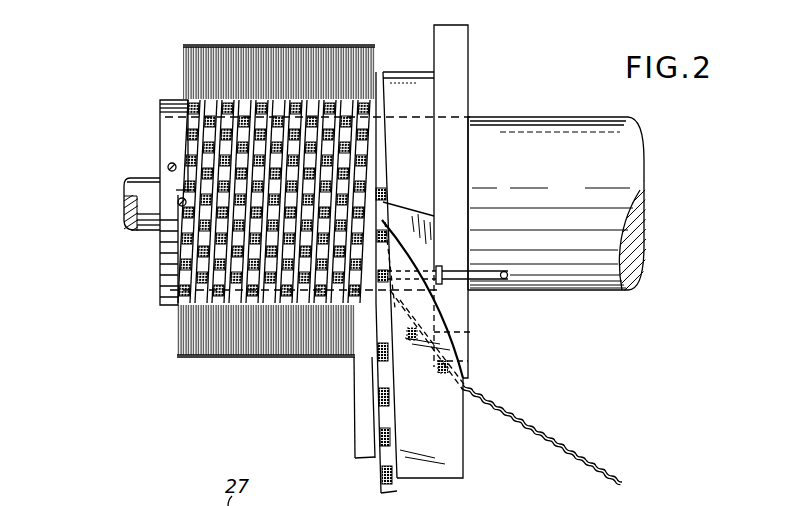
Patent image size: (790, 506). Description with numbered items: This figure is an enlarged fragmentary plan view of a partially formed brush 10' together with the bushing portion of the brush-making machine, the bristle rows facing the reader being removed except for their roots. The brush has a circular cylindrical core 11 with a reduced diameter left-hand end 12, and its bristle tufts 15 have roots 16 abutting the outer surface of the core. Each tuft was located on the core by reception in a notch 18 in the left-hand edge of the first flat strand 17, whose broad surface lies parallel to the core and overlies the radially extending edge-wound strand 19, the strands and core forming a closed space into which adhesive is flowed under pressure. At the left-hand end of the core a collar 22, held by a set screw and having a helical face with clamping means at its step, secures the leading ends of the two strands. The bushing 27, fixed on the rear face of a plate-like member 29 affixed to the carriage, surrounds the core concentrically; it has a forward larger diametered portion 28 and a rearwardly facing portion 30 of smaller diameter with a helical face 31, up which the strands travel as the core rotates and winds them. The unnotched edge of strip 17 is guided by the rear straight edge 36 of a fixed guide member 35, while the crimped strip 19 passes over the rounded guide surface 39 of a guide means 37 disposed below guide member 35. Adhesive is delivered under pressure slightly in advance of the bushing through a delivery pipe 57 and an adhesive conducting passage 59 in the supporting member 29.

The partially formed brush 10' is at (269, 260).
The circular cylindrical core 11 is at (570, 117).
The reduced diameter left-hand end 12 is at (125, 210).
The bristle tufts 15 is at (183, 56).
The roots 16 is at (178, 305).
The first flat strand 17 is at (216, 105).
The notch 18 is at (188, 154).
The edge-wound strand 19 is at (543, 437).
The collar 22 is at (160, 118).
The bushing 27 is at (437, 93).
The forward larger diametered portion 28 is at (413, 80).
The plate-like member 29 is at (462, 168).
The rearwardly facing portion 30 is at (377, 97).
The helical face 31 is at (384, 164).
The fixed guide member 35 is at (452, 462).
The rear straight edge 36 is at (386, 386).
The guide means 37 is at (470, 332).
The rounded guide surface 39 is at (468, 361).
The delivery pipe 57 is at (482, 278).
The adhesive conducting passage 59 is at (412, 277).